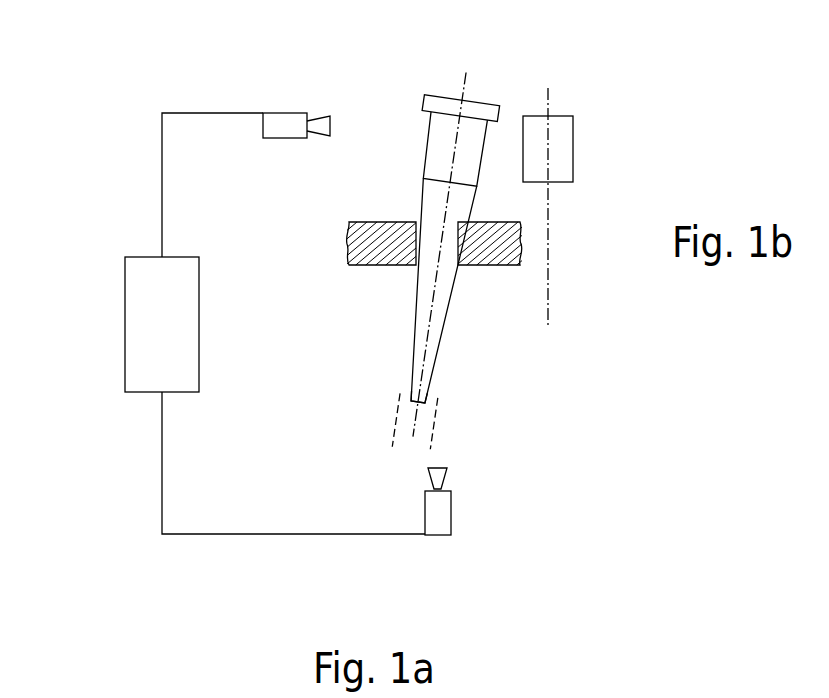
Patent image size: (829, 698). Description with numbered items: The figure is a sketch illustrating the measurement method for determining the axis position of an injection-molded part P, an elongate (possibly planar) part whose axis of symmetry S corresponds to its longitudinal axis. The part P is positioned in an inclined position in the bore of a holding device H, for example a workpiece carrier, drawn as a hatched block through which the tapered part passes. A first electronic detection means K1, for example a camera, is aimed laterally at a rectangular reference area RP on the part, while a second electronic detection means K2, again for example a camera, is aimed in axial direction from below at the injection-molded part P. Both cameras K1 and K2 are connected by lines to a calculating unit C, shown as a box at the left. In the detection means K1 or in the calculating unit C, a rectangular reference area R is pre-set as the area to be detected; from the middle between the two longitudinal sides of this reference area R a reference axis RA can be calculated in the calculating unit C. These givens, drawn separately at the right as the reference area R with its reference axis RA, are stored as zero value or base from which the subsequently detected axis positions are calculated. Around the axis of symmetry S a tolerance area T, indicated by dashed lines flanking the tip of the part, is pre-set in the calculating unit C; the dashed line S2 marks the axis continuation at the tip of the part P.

In FIG. 1A, the calculating unit C is at (125, 332).
In FIG. 1A, the electronic detection means K1 is at (286, 112).
In FIG. 1A, the second electronic detection means K2 is at (435, 514).
In FIG. 1A, the holding device H is at (347, 238).
In FIG. 1A, the injection-molded part P is at (441, 247).
In FIG. 1A, the rectangular reference area RP is at (448, 150).
In FIG. 1A, the axis of symmetry S is at (465, 83).
In FIG. 1A, the pipette tip S2 is at (410, 422).
In FIG. 1A, the tolerance area T is at (433, 423).
In FIG. 1B, the pre-set reference area R is at (560, 149).
In FIG. 1B, the reference axis RA is at (548, 253).